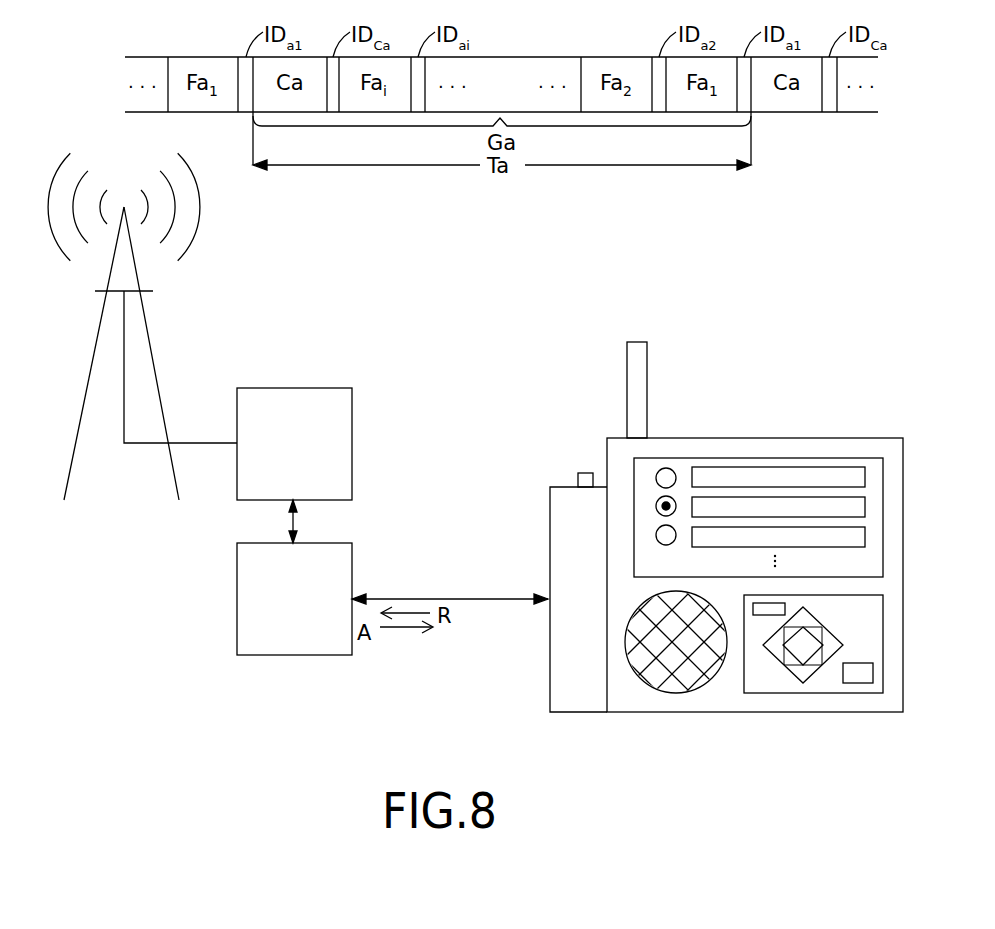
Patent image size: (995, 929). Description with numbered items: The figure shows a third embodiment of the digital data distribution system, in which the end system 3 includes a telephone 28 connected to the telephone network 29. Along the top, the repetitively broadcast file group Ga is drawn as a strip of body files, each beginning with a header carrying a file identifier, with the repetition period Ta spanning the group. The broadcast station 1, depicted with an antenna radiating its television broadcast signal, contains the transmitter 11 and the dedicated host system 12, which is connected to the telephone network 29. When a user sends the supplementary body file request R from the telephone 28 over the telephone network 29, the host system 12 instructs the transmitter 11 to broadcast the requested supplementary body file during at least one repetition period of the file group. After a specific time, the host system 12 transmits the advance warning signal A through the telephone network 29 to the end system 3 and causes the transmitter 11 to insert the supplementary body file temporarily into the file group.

The broadcast station 1 is at (203, 332).
The transmitter 11 is at (298, 388).
The dedicated host system 12 is at (352, 582).
The telephone network 29 is at (448, 599).
The telephone 28 is at (549, 650).
The end system 3 is at (826, 438).